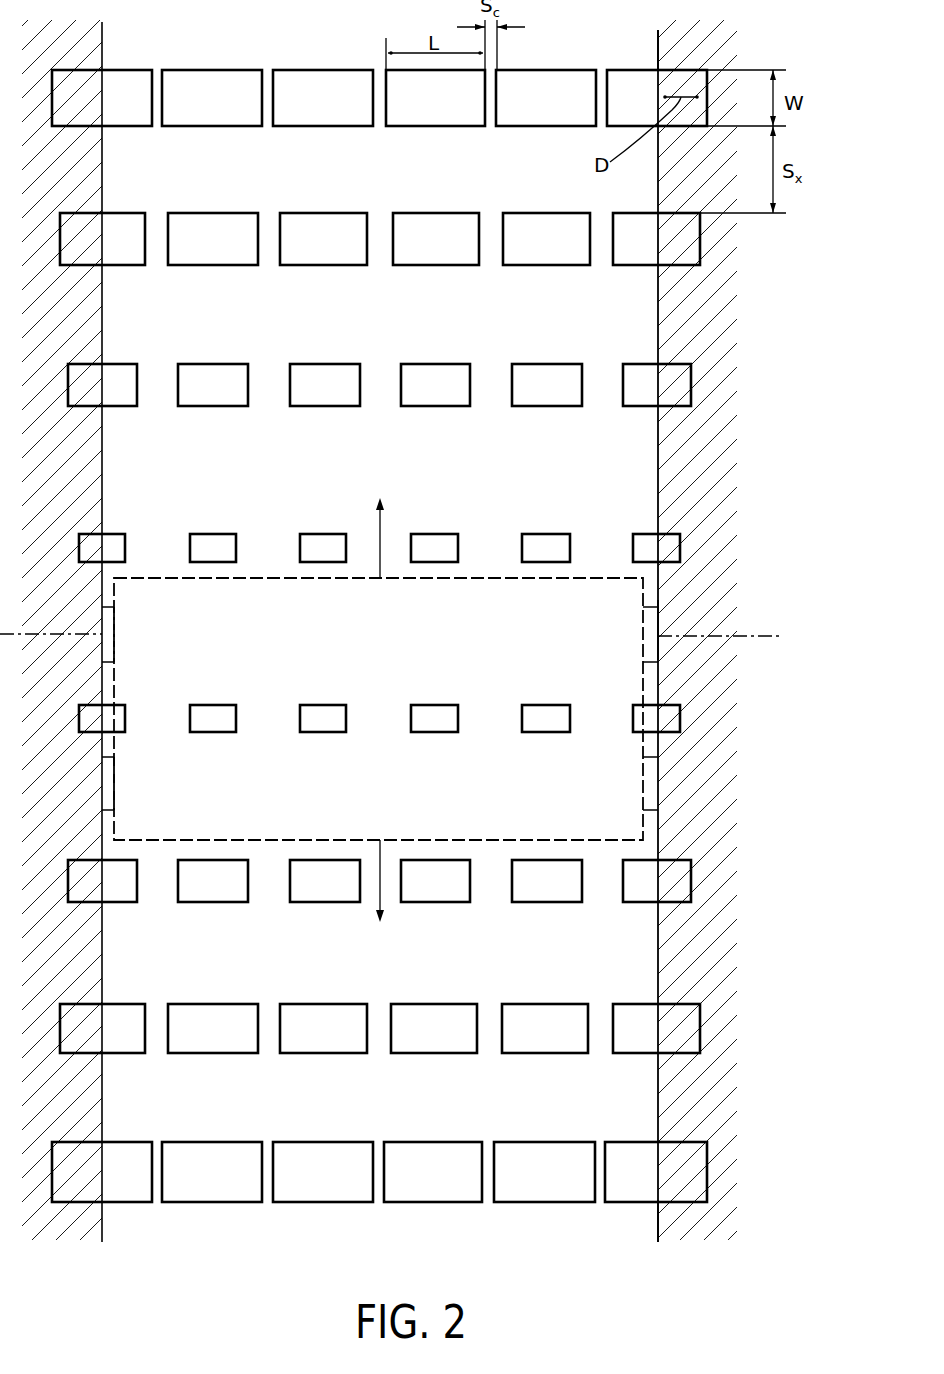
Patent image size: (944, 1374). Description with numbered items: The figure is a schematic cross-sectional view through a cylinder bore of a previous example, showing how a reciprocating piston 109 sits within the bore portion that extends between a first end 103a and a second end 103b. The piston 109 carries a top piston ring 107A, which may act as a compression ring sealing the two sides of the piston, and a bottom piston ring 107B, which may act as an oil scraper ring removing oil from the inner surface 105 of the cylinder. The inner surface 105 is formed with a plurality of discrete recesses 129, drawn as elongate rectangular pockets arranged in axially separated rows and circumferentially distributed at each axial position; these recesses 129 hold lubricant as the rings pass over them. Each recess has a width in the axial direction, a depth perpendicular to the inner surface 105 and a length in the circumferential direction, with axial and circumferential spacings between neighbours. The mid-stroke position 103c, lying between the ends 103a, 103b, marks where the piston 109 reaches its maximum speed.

The recesses 129 is at (320, 80).
The piston 109 is at (480, 578).
The top piston ring 107A is at (112, 628).
The bottom piston ring 107B is at (112, 780).
The inner surface 105 is at (658, 950).
The first end 103a is at (658, 1222).
The second end 103b is at (658, 38).
The mid-stroke position 103c is at (660, 628).